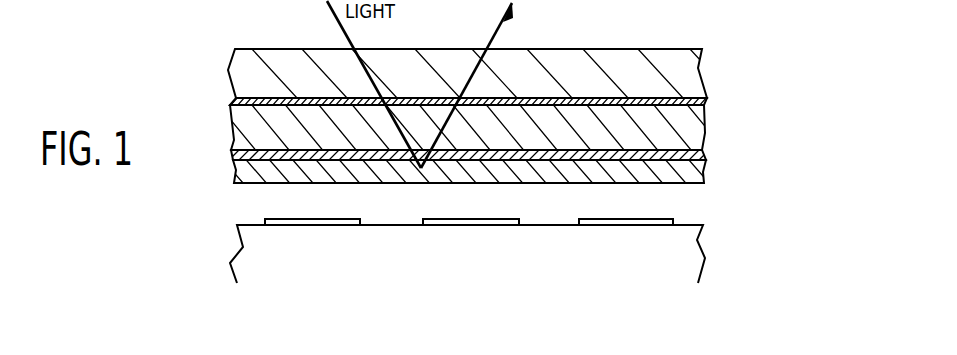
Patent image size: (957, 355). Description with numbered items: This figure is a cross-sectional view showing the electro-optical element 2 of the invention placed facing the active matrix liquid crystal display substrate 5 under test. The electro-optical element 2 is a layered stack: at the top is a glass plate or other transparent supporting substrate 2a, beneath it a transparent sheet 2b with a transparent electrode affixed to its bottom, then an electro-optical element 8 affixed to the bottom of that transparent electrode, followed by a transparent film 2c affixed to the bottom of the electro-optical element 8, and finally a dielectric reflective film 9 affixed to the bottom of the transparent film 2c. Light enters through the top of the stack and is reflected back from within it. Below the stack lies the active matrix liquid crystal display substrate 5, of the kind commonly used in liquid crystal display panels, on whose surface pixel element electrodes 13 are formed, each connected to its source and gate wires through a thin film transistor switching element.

The electro-optical element 2 is at (838, 3).
The transparent supporting substrate 2a is at (703, 70).
The transparent sheet 2b is at (706, 101).
The electro-optical element 8 is at (702, 133).
The transparent film 2c is at (703, 158).
The dielectric reflective film 9 is at (703, 172).
The pixel element electrodes 13 is at (283, 218).
The active matrix liquid crystal display substrate 5 is at (226, 254).